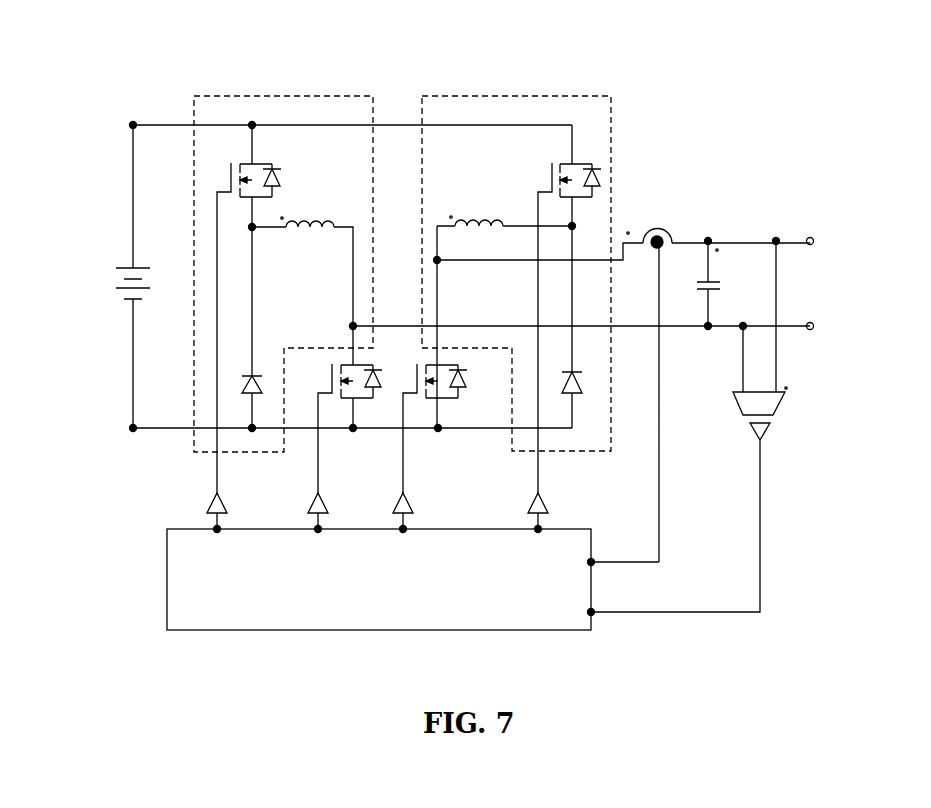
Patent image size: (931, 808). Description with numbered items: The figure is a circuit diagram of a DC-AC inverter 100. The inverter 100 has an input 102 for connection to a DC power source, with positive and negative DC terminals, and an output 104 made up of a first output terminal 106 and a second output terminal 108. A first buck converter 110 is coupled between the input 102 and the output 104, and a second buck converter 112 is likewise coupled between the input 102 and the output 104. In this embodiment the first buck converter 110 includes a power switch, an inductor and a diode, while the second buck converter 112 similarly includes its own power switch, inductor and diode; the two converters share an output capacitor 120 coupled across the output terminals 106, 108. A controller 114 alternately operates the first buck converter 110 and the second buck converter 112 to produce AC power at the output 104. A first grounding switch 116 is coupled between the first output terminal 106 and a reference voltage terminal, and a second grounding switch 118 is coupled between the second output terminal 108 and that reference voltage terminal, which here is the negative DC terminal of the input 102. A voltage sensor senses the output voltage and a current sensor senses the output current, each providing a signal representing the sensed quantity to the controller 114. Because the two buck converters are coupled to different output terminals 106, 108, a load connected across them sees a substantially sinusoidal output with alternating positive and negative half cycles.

The inverter 100 is at (198, 47).
The input 102 is at (86, 226).
The output 104 is at (622, 394).
The first output terminal 106 is at (813, 238).
The second output terminal 108 is at (812, 329).
The first buck converter 110 is at (507, 269).
The second buck converter 112 is at (289, 269).
The controller 114 is at (166, 585).
The first grounding switch 116 is at (452, 398).
The second grounding switch 118 is at (363, 398).
The output capacitor 120 is at (722, 270).